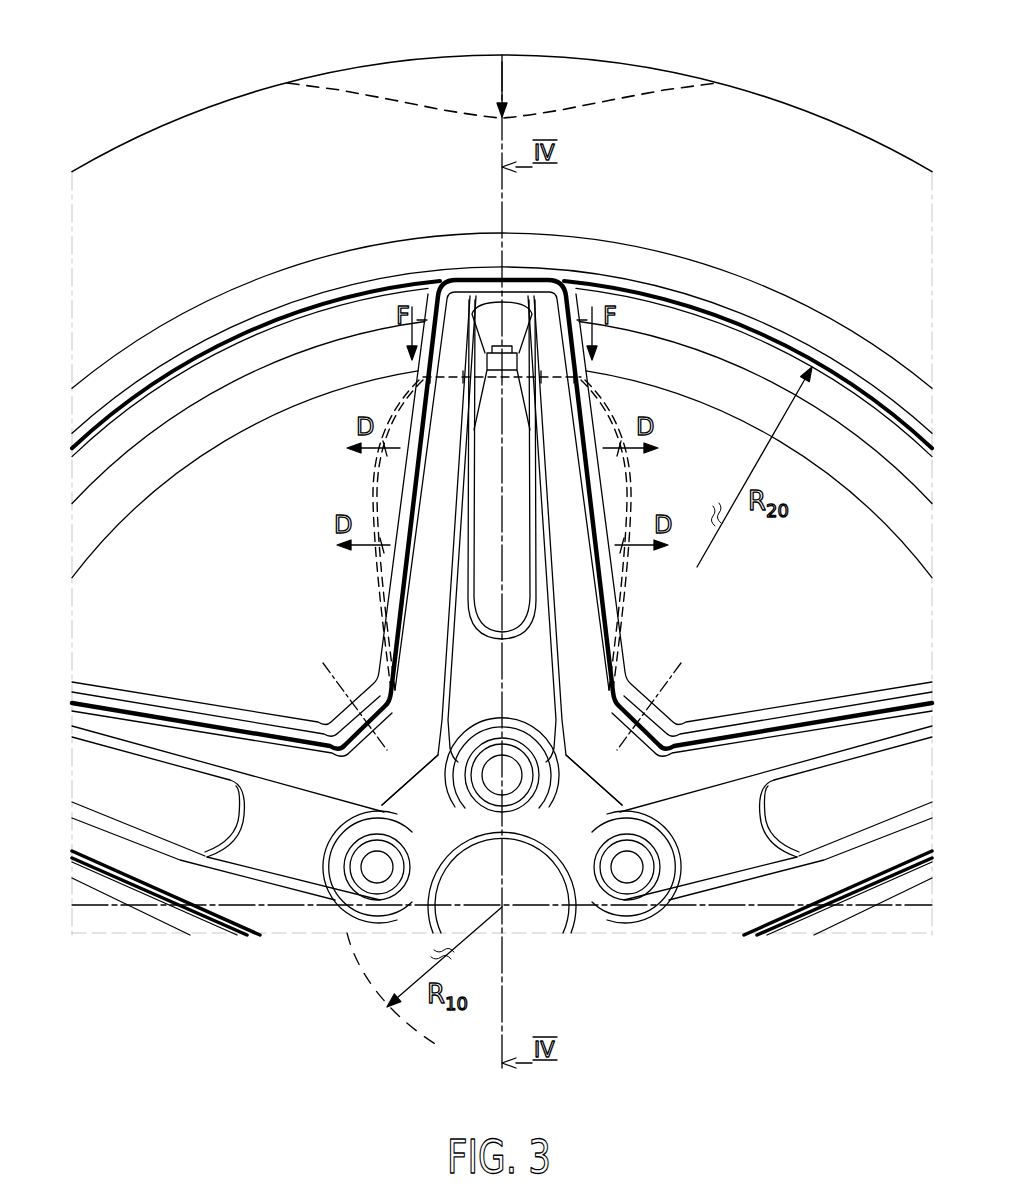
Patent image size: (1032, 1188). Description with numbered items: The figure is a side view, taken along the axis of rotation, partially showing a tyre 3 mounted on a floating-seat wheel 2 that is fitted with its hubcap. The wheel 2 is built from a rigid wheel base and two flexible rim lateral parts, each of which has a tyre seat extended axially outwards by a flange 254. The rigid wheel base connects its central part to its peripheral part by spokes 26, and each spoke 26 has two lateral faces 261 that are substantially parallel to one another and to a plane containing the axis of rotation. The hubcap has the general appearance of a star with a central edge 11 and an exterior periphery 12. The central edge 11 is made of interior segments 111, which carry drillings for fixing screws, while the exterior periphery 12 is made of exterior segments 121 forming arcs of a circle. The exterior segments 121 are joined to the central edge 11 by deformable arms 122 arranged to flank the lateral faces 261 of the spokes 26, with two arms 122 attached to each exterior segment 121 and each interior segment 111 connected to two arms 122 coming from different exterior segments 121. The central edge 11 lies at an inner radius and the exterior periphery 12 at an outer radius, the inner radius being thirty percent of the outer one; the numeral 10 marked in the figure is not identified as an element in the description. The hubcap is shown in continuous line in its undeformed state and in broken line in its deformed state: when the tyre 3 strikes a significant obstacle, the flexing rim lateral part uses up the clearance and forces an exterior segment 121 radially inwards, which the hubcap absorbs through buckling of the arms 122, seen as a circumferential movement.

The floating-seat wheel 2 is at (291, 856).
The tyre 3 is at (240, 194).
The spoke 10 is at (682, 663).
The central edge 11 is at (762, 758).
The interior segments 111 is at (620, 723).
The exterior periphery 12 is at (600, 280).
The exterior segments 121 is at (473, 272).
The deformable arms 122 is at (300, 403).
The spokes 26 is at (423, 673).
The lateral faces 261 is at (400, 583).
The flange 254 is at (132, 358).